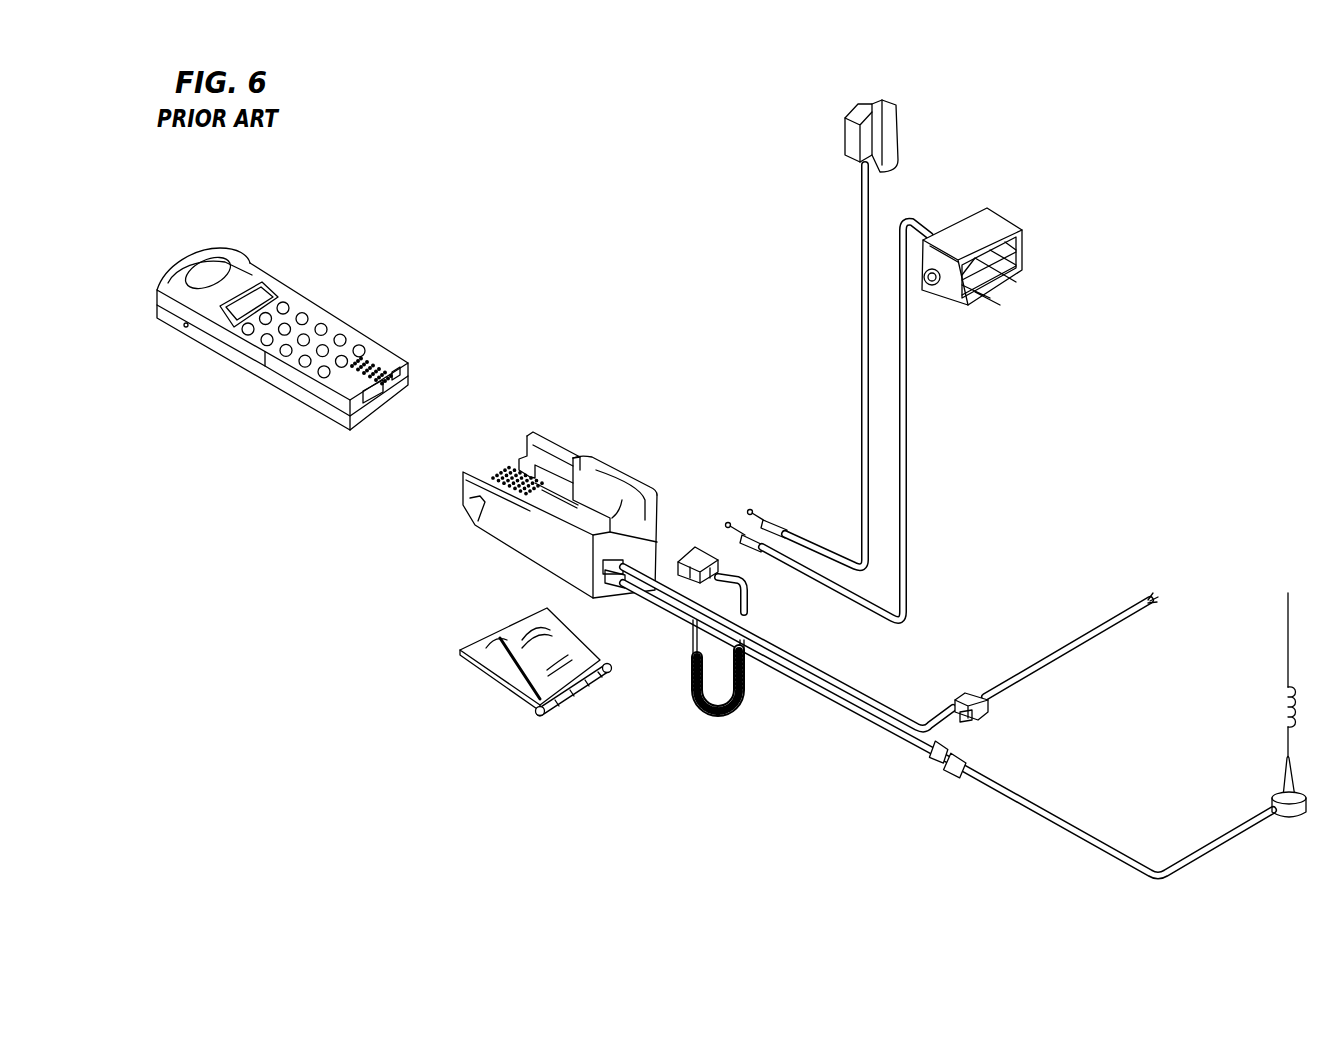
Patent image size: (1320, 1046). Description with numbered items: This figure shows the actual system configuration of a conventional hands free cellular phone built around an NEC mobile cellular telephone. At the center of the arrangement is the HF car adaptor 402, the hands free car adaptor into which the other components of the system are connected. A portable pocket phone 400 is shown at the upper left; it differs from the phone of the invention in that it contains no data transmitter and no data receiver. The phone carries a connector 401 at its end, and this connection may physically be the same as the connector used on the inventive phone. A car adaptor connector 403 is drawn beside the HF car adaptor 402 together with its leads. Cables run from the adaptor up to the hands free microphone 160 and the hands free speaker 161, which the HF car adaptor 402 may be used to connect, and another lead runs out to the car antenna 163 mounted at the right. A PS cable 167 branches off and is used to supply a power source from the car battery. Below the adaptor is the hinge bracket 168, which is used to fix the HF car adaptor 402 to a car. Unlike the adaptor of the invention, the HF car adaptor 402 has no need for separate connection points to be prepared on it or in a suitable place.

The portable pocket phone 400 is at (282, 284).
The connector 401 is at (384, 402).
The HF car adaptor 402 is at (562, 453).
The car adaptor connector 403 is at (707, 537).
The hands free microphone 160 is at (943, 108).
The hands free speaker 161 is at (1073, 245).
The PS cable 167 is at (1037, 662).
The car antenna 163 is at (1280, 772).
The hinge bracket 168 is at (550, 712).